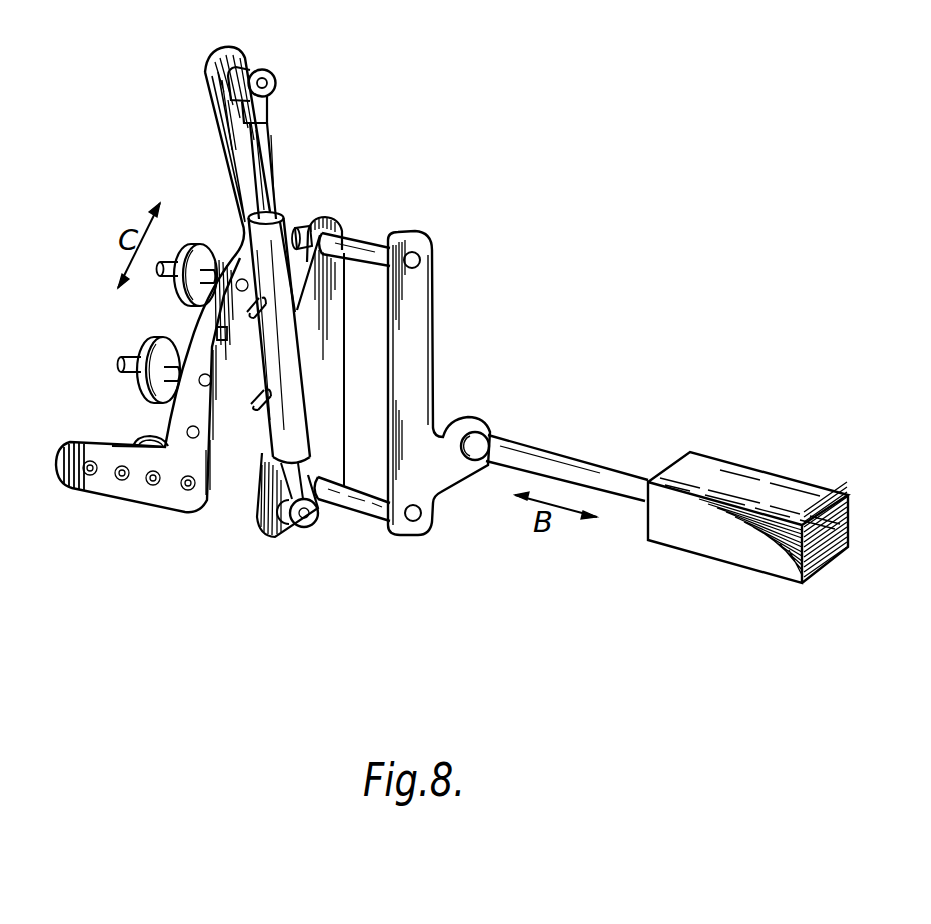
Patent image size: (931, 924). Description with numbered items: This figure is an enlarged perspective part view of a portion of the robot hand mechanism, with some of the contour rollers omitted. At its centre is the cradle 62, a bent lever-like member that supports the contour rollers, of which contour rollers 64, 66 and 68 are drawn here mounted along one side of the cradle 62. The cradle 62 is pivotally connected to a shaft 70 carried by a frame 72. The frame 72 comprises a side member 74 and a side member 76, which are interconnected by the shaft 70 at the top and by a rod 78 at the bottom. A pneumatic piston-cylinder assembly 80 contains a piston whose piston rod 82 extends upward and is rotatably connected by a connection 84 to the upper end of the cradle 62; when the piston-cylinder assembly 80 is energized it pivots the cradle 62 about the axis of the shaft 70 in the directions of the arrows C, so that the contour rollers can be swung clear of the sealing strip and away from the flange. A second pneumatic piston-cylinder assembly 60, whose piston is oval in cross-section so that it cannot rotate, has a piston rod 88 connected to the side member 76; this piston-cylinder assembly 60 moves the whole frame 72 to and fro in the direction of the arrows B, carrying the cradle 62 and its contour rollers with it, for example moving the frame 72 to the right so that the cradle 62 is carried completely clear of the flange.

The pneumatic piston-cylinder assembly 60 is at (733, 550).
The cradle 62 is at (105, 476).
The contour roller 64 is at (199, 258).
The contour roller 66 is at (161, 338).
The contour roller 68 is at (143, 436).
The shaft 70 is at (355, 243).
The frame 72 is at (398, 375).
The side member 74 is at (340, 370).
The side member 76 is at (418, 335).
The rod 78 is at (358, 500).
The pneumatic piston-cylinder assembly 80 is at (270, 422).
The piston rod 82 is at (270, 157).
The connection 84 is at (264, 70).
The piston rod 88 is at (565, 460).